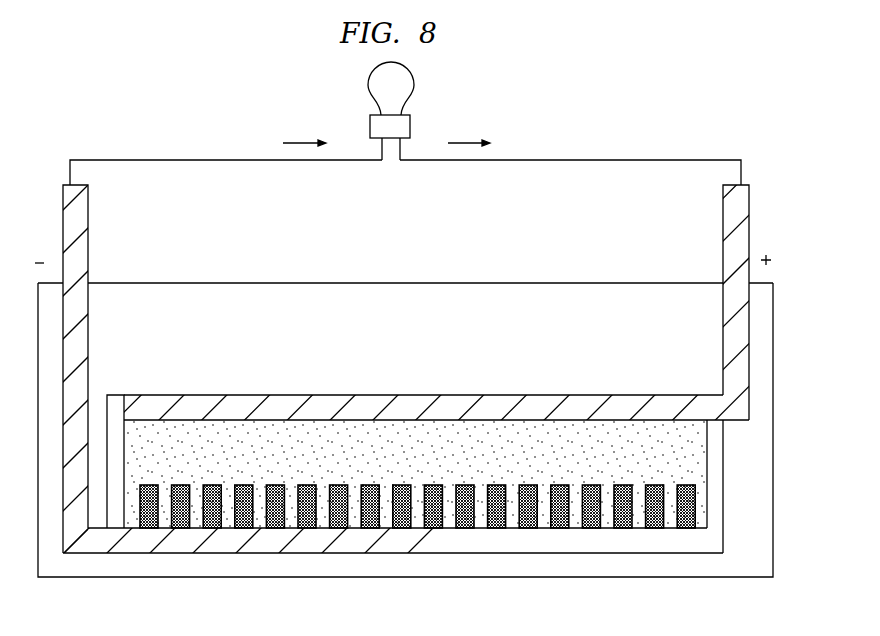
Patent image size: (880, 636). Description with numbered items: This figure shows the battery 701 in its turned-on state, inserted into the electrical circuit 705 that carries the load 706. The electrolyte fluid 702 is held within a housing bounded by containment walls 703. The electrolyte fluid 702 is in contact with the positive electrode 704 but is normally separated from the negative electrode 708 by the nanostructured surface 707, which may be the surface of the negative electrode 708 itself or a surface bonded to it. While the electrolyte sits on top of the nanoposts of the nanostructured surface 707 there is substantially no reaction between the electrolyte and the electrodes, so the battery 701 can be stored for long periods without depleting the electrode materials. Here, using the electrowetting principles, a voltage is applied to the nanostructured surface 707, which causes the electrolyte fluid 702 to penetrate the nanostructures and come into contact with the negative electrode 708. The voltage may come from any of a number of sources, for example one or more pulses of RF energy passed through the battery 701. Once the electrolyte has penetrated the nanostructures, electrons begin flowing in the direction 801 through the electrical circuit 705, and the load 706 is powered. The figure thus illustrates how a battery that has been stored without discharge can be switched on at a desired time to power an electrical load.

The battery 701 is at (775, 340).
The electrolyte fluid 702 is at (572, 426).
The containment walls 703 is at (118, 393).
The positive electrode 704 is at (750, 215).
The electrical circuit 705 is at (537, 159).
The load 706 is at (413, 78).
The nanostructured surface 707 is at (401, 530).
The negative electrode 708 is at (88, 228).
The direction of electron flow 801 is at (297, 143).